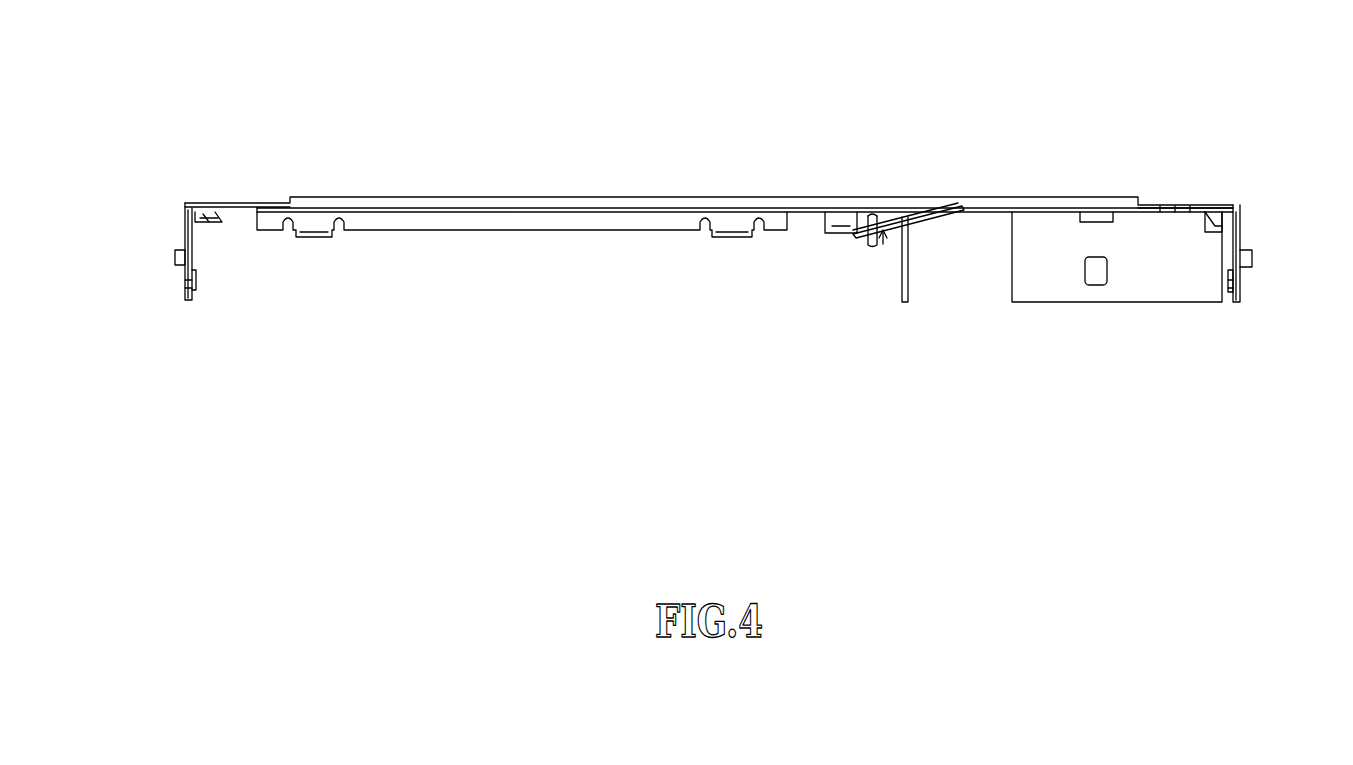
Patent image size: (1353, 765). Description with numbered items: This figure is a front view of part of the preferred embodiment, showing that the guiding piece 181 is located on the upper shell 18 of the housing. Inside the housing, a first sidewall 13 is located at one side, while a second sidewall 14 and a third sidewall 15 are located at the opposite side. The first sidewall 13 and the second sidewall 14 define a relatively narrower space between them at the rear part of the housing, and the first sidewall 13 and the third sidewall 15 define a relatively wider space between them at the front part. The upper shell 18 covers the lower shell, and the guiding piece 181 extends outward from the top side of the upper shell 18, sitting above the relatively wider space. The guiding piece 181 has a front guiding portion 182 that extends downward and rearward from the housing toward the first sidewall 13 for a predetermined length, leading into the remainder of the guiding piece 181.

The first sidewall 13 is at (182, 228).
The second sidewall 14 is at (910, 255).
The third sidewall 15 is at (1242, 234).
The upper shell 18 is at (242, 200).
The guiding piece 181 is at (883, 248).
The front guiding portion 182 is at (935, 222).